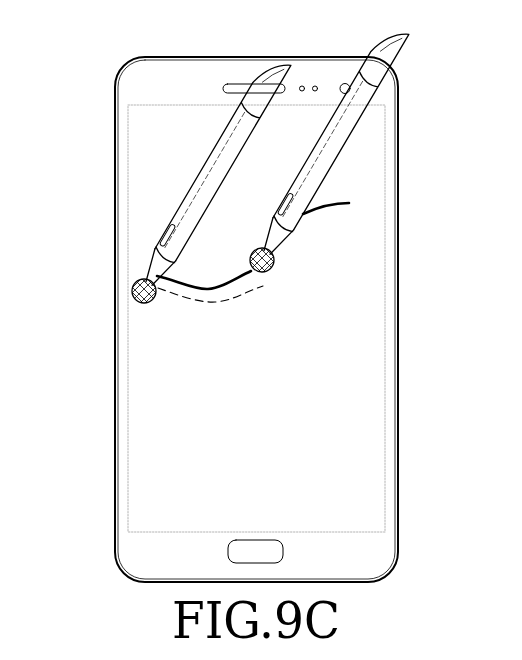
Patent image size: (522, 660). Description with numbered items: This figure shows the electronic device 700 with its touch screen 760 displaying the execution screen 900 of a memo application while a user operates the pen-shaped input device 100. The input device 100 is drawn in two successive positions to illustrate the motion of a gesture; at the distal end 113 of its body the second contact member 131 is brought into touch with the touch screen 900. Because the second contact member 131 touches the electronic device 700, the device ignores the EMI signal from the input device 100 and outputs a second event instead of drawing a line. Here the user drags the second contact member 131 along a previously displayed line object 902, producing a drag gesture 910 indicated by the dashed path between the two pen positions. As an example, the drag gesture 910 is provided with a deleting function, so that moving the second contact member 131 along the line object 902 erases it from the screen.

The electronic device 700 is at (258, 58).
The touch screen 760 is at (388, 104).
The input device 100 is at (222, 135).
The distal end 113 is at (133, 292).
The second contact member 131 is at (156, 299).
The line object 902 is at (332, 216).
The drag gesture 910 is at (222, 304).
The execution screen 900 is at (373, 401).